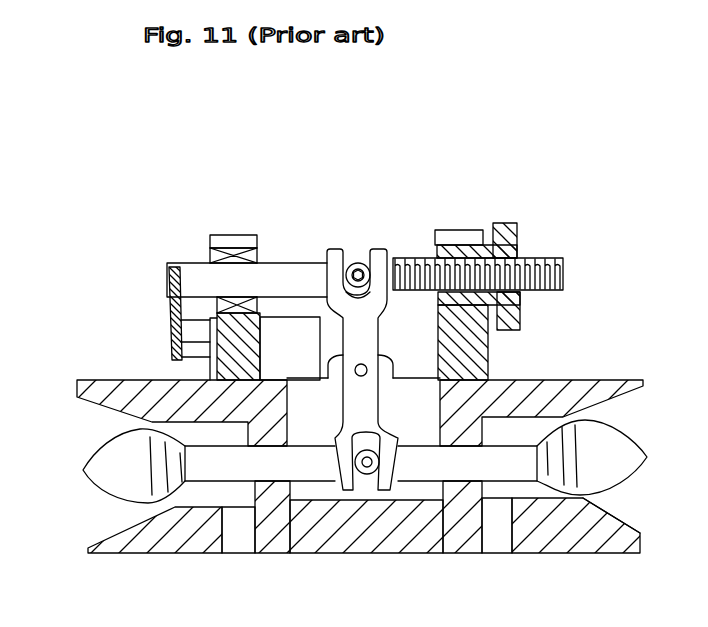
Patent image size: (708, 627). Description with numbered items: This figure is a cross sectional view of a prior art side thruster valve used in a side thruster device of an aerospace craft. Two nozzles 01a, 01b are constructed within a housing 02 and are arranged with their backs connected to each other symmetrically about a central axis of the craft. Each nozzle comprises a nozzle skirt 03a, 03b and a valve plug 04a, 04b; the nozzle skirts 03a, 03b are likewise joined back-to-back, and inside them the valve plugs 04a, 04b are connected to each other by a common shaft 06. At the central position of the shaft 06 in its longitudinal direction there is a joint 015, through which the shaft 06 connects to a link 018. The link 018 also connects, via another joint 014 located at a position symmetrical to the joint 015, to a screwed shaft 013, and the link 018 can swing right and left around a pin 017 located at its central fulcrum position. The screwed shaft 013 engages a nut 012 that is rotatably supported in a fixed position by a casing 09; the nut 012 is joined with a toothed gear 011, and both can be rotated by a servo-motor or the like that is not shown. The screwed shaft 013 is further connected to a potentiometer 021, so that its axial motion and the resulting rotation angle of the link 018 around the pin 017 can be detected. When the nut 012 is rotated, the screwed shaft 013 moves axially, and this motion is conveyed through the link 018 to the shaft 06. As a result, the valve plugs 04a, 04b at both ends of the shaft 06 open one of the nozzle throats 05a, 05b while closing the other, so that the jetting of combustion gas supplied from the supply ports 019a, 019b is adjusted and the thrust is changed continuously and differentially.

The nozzle 01a is at (103, 491).
The nozzle 01b is at (618, 445).
The housing 02 is at (368, 530).
The nozzle skirt 03a is at (135, 542).
The nozzle skirt 03b is at (610, 548).
The valve plug 04a is at (108, 455).
The valve plug 04b is at (620, 463).
The nozzle throat 05a is at (160, 423).
The nozzle throat 05b is at (587, 502).
The common shaft 06 is at (310, 468).
The casing 09 is at (462, 230).
The toothed gear 011 is at (512, 223).
The nut 012 is at (520, 303).
The screwed shaft 013 is at (300, 268).
The joint 014 is at (358, 262).
The joint 015 is at (372, 476).
The pin 017 is at (358, 375).
The link 018 is at (360, 332).
The supply port 019a is at (238, 540).
The supply port 019b is at (497, 540).
The potentiometer 021 is at (170, 328).